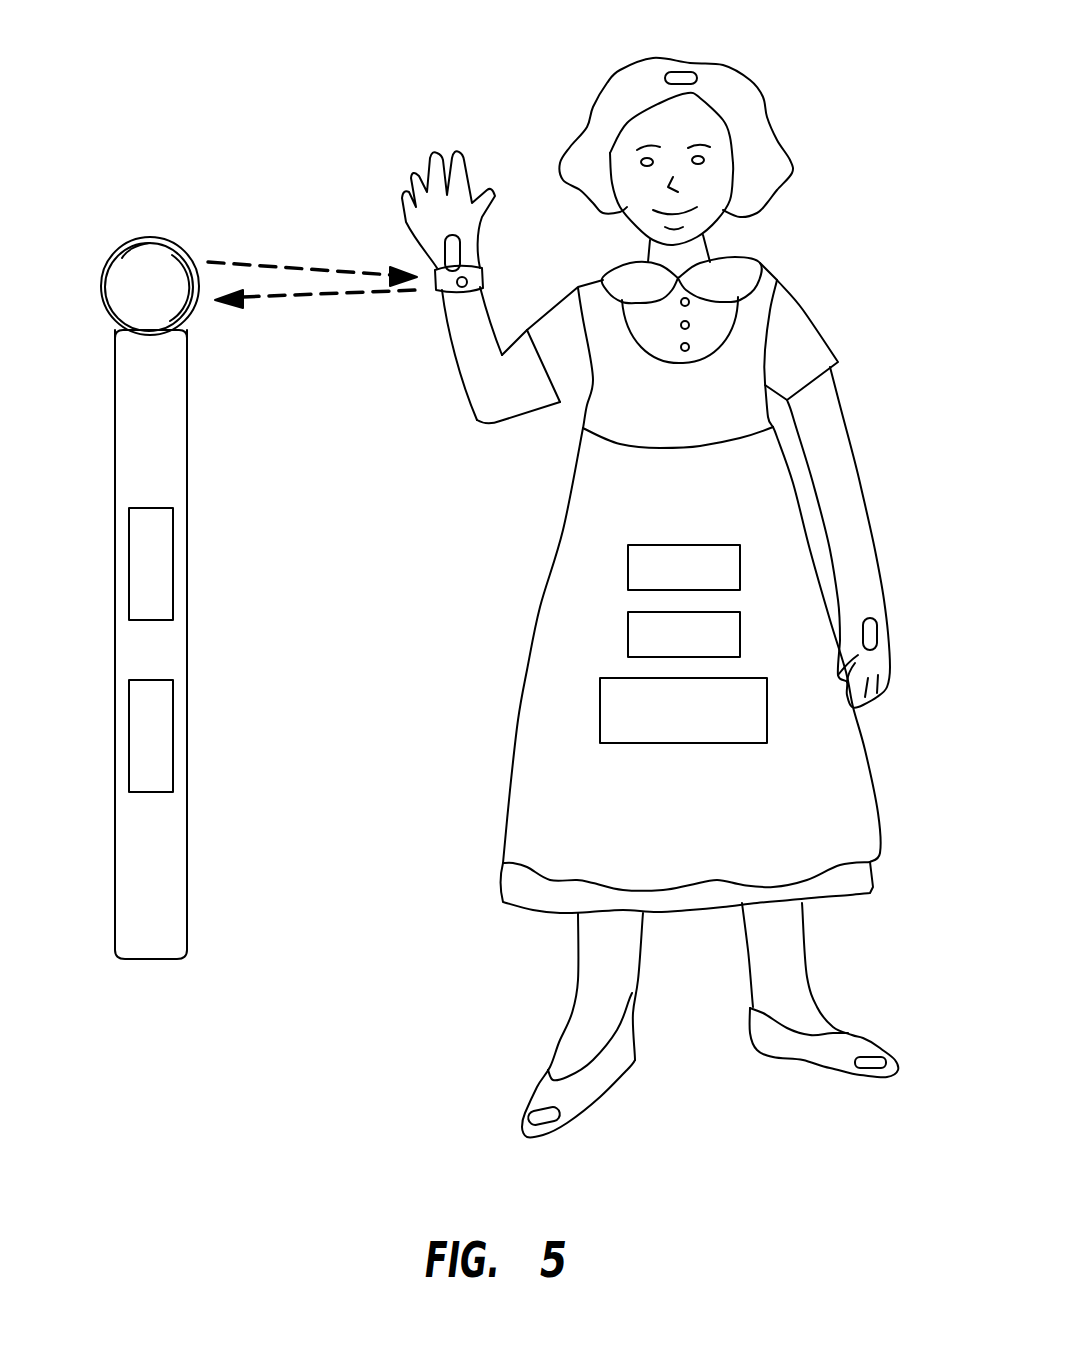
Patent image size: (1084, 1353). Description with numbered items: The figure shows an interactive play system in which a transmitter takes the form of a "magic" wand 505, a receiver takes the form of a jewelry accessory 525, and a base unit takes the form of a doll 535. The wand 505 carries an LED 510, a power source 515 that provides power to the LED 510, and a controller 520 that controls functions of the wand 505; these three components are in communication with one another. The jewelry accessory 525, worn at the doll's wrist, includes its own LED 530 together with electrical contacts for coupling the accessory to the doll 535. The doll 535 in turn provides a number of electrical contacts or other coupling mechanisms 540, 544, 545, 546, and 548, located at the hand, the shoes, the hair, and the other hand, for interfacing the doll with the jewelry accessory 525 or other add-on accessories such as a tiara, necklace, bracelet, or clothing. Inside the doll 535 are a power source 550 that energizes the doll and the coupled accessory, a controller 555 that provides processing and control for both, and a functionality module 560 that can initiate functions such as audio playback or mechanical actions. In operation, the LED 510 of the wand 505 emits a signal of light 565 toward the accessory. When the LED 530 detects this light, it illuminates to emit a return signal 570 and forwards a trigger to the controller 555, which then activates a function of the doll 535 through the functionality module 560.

The "magic" wand 505 is at (156, 544).
The LED 510 is at (173, 241).
The power source 515 is at (154, 508).
The controller 520 is at (150, 680).
The jewelry accessory 525 is at (493, 262).
The LED 530 is at (458, 340).
The doll 535 is at (655, 600).
The electrical contact 540 is at (445, 253).
The electrical contact 544 is at (544, 1118).
The electrical contact 545 is at (682, 72).
The electrical contact 546 is at (872, 1067).
The electrical contact 548 is at (878, 633).
The power source 550 is at (715, 545).
The controller 555 is at (740, 624).
The functionality module 560 is at (750, 678).
The signal of light 565 is at (277, 248).
The signal 570 is at (325, 312).